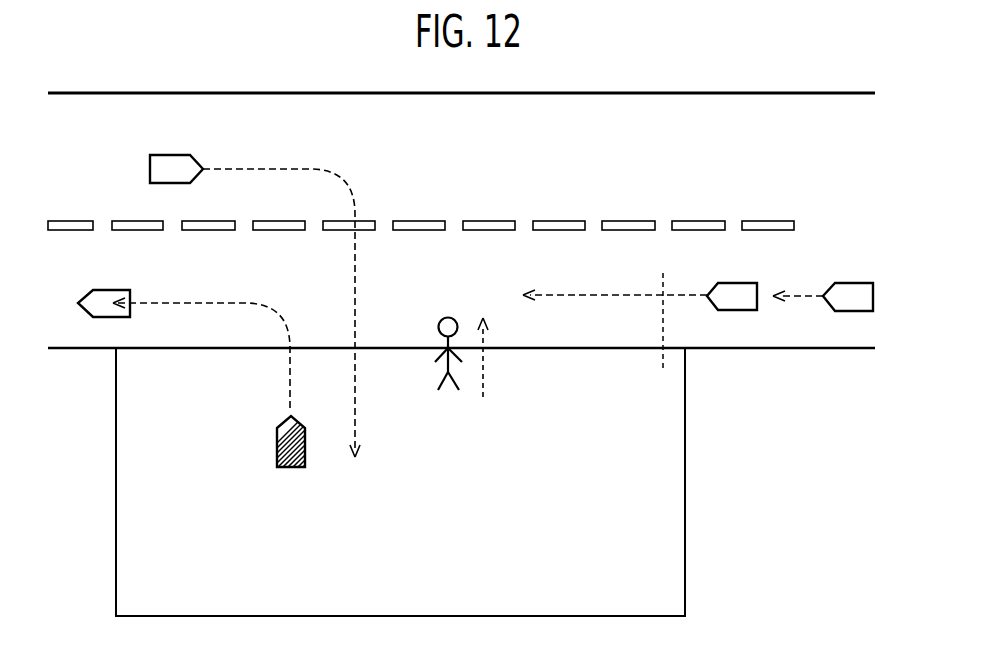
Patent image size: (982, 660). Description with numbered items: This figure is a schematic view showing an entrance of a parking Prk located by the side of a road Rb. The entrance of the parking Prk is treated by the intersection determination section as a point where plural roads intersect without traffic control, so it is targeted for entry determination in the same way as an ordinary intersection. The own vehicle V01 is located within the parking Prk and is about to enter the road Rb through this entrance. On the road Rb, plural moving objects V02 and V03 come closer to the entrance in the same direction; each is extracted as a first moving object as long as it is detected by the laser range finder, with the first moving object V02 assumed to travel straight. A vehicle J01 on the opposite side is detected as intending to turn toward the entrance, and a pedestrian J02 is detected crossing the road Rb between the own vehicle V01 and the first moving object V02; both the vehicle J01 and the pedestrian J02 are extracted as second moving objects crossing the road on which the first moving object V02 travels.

The vehicle J01 is at (150, 166).
The pedestrian J02 is at (450, 393).
The own vehicle V01 is at (292, 467).
The first moving object V02 is at (732, 284).
The moving object V03 is at (843, 283).
The road Rb is at (743, 178).
The parking Prk is at (685, 508).